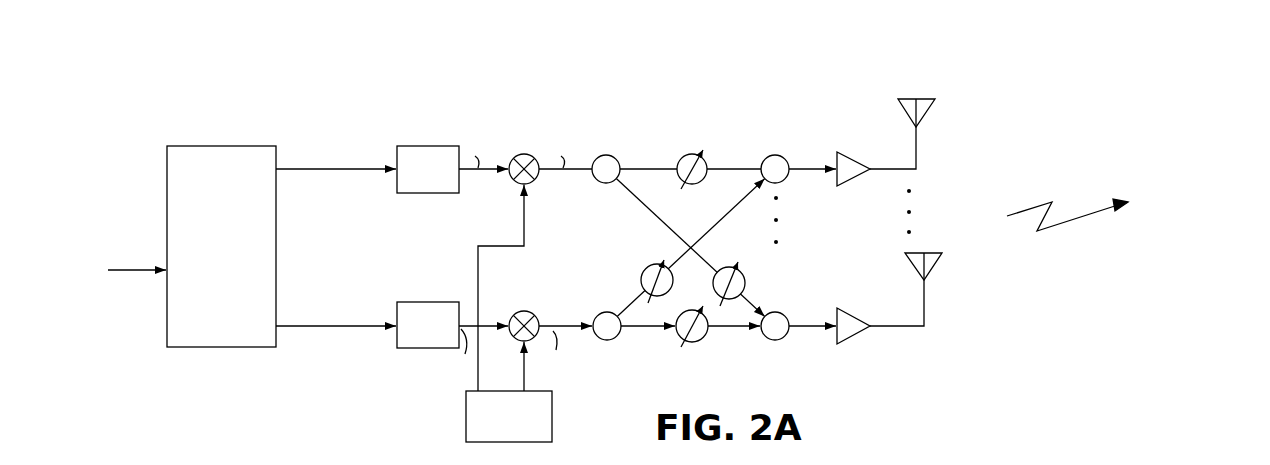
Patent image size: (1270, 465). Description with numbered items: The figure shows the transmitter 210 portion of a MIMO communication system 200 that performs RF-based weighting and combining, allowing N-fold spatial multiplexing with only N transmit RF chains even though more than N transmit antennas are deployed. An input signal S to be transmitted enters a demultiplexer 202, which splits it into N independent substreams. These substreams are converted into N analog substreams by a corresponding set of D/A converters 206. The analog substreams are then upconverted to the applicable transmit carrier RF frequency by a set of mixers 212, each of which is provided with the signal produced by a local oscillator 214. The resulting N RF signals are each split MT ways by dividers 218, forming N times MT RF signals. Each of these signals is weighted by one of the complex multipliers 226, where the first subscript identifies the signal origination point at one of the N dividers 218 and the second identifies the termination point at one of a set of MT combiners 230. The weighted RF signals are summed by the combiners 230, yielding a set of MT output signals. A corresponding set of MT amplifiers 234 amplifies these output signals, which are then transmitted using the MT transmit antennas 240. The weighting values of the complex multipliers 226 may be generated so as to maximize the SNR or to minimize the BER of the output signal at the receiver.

The MIMO communication system 200 is at (1183, 66).
The demultiplexer 202 is at (269, 345).
The D/A converters 206 is at (422, 194).
The transmitter 210 is at (448, 117).
The mixers 212 is at (539, 183).
The local oscillator 214 is at (553, 416).
The dividers 218 is at (610, 158).
The complex multipliers 226 is at (708, 160).
The combiners 230 is at (786, 156).
The amplifiers 234 is at (853, 185).
The transmit antennas 240 is at (924, 98).